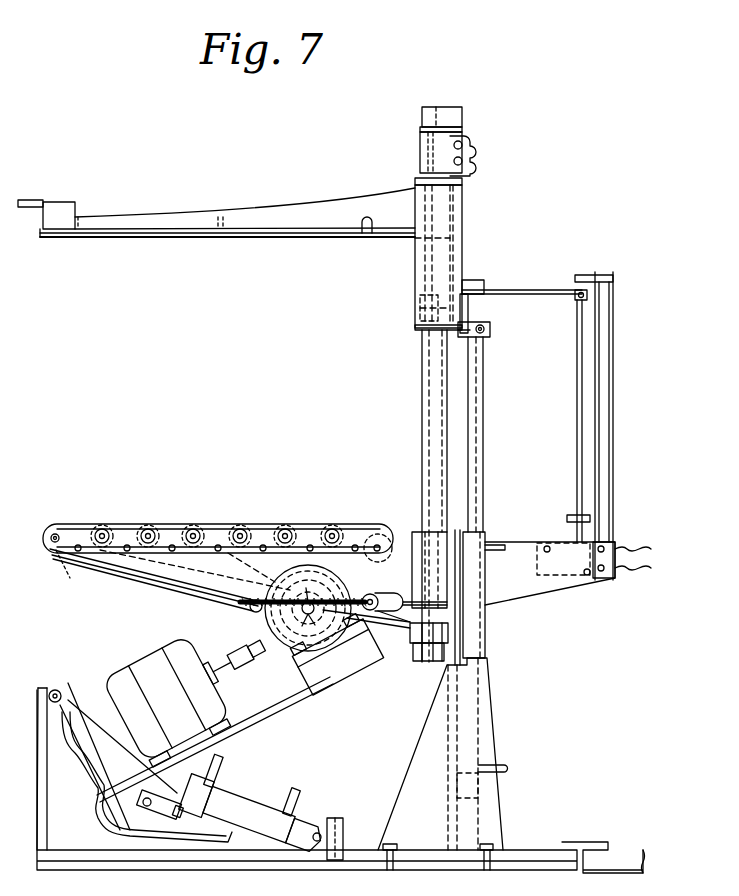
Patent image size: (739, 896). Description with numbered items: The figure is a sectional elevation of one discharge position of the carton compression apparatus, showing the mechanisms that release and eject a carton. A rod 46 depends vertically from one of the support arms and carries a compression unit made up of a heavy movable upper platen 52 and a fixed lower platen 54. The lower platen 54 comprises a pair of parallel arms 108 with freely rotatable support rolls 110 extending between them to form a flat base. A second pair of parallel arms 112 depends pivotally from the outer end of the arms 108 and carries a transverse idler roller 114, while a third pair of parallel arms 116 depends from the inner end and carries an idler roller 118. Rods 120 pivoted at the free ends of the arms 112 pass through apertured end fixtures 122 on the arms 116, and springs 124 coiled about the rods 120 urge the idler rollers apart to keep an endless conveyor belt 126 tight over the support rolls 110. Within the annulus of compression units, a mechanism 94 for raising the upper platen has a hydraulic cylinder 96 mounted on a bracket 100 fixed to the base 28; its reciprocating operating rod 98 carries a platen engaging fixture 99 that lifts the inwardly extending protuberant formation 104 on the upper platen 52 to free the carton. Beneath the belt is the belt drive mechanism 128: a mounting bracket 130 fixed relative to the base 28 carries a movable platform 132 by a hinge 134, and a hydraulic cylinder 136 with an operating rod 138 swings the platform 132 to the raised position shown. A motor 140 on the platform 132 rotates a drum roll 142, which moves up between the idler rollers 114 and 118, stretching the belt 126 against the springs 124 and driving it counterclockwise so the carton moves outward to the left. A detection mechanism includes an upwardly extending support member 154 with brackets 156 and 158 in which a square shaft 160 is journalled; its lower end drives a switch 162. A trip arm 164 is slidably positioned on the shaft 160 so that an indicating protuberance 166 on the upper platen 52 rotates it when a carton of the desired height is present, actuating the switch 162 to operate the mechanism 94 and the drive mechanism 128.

The base 28 is at (625, 865).
The rod 46 is at (430, 400).
The upper platen 52 is at (305, 218).
The lower platen 54 is at (263, 523).
The mechanism 94 is at (490, 497).
The hydraulic cylinder 96 is at (470, 690).
The operating rod 98 is at (481, 392).
The platen engaging fixture 99 is at (488, 331).
The bracket 100 is at (490, 815).
The protuberant formation 104 is at (470, 312).
The parallel arms 108 is at (63, 208).
The support rolls 110 is at (235, 528).
The parallel arms 112 is at (172, 586).
The idler roller 114 is at (256, 612).
The parallel arms 116 is at (417, 570).
The idler roller 118 is at (367, 629).
The rods 120 is at (418, 660).
The apertured end fixtures 122 is at (318, 602).
The springs 124 is at (195, 570).
The conveyor belt 126 is at (360, 530).
The mechanism 128 is at (137, 647).
The mounting bracket 130 is at (205, 850).
The movable platform 132 is at (256, 722).
The hinge 134 is at (57, 688).
The hydraulic cylinder 136 is at (250, 812).
The operating rod 138 is at (183, 797).
The motor 140 is at (183, 710).
The drum roll 142 is at (327, 637).
The support member 154 is at (604, 412).
The bracket 156 is at (598, 274).
The bracket 158 is at (590, 518).
The square shaft 160 is at (576, 410).
The switch 162 is at (575, 567).
The trip arm 164 is at (522, 290).
The indicating protuberance 166 is at (472, 282).